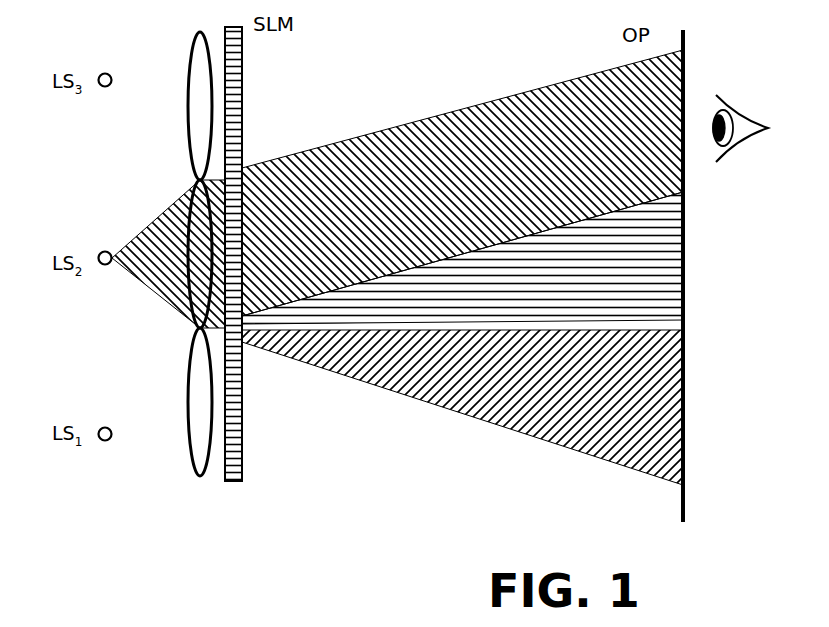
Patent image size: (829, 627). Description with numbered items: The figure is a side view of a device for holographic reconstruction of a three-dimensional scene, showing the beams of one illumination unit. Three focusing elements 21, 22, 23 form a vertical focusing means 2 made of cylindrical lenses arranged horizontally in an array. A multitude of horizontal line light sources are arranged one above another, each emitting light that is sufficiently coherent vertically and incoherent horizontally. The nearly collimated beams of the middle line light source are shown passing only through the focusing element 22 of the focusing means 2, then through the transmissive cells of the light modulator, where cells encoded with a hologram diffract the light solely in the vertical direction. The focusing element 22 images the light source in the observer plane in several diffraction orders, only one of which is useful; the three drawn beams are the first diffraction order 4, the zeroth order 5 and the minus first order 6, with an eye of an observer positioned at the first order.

The vertical focusing means 2 is at (176, 245).
The focusing element 21 is at (198, 442).
The focusing element 22 is at (172, 208).
The focusing element 23 is at (197, 133).
The first diffraction order 4 is at (742, 120).
The zeroth order 5 is at (478, 258).
The minus first order 6 is at (478, 407).